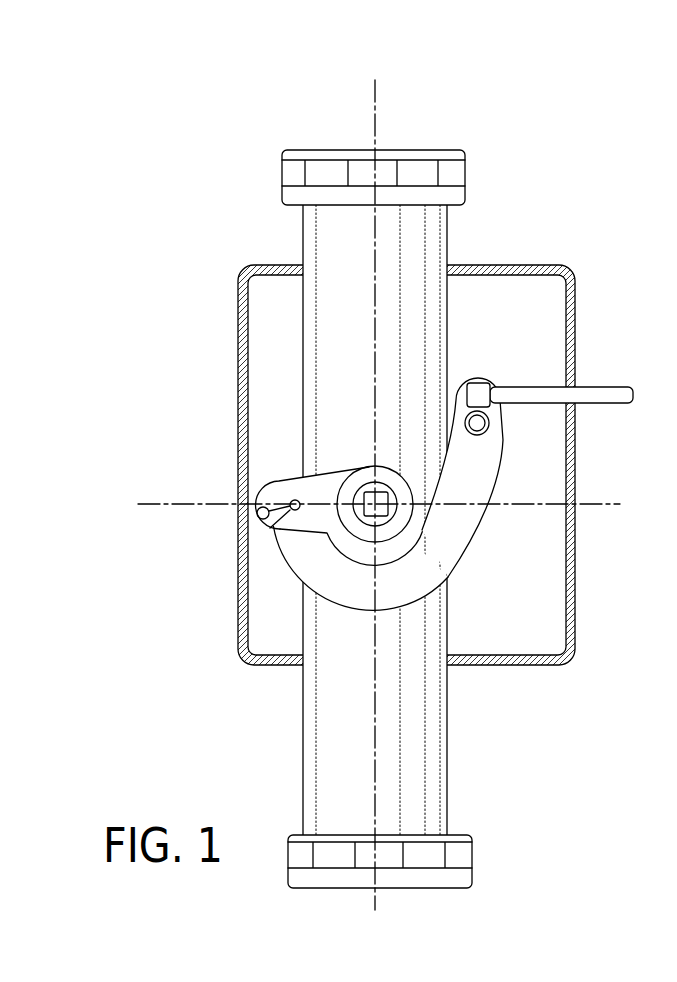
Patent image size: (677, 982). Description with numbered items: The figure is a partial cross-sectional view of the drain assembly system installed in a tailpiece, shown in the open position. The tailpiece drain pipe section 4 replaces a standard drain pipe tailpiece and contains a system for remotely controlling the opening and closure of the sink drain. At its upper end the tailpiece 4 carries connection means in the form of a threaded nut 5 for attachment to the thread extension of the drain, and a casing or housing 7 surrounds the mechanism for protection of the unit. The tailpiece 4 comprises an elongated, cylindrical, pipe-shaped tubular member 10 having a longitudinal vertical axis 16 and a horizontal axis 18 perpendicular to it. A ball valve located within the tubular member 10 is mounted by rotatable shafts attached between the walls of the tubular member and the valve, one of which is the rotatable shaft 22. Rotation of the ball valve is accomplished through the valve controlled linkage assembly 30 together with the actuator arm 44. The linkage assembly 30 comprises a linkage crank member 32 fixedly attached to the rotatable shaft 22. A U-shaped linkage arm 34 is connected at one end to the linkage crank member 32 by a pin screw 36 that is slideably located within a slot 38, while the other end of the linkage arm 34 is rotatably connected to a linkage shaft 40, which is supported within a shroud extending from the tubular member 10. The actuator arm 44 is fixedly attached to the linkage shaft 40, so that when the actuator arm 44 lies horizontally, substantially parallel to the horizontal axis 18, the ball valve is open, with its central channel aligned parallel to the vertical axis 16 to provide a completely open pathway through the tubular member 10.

The tailpiece drain pipe section 4 is at (405, 519).
The threaded nut 5 is at (290, 177).
The casing or housing 7 is at (575, 563).
The tubular member 10 is at (320, 323).
The longitudinal vertical axis 16 is at (374, 114).
The horizontal axis 18 is at (157, 506).
The rotatable shaft 22 is at (390, 514).
The valve controlled linkage assembly 30 is at (505, 437).
The linkage crank member 32 is at (303, 480).
The U-shaped linkage arm 34 is at (313, 578).
The pin screw 36 is at (290, 530).
The slot 38 is at (262, 507).
The linkage shaft 40 is at (478, 386).
The actuator arm 44 is at (597, 388).